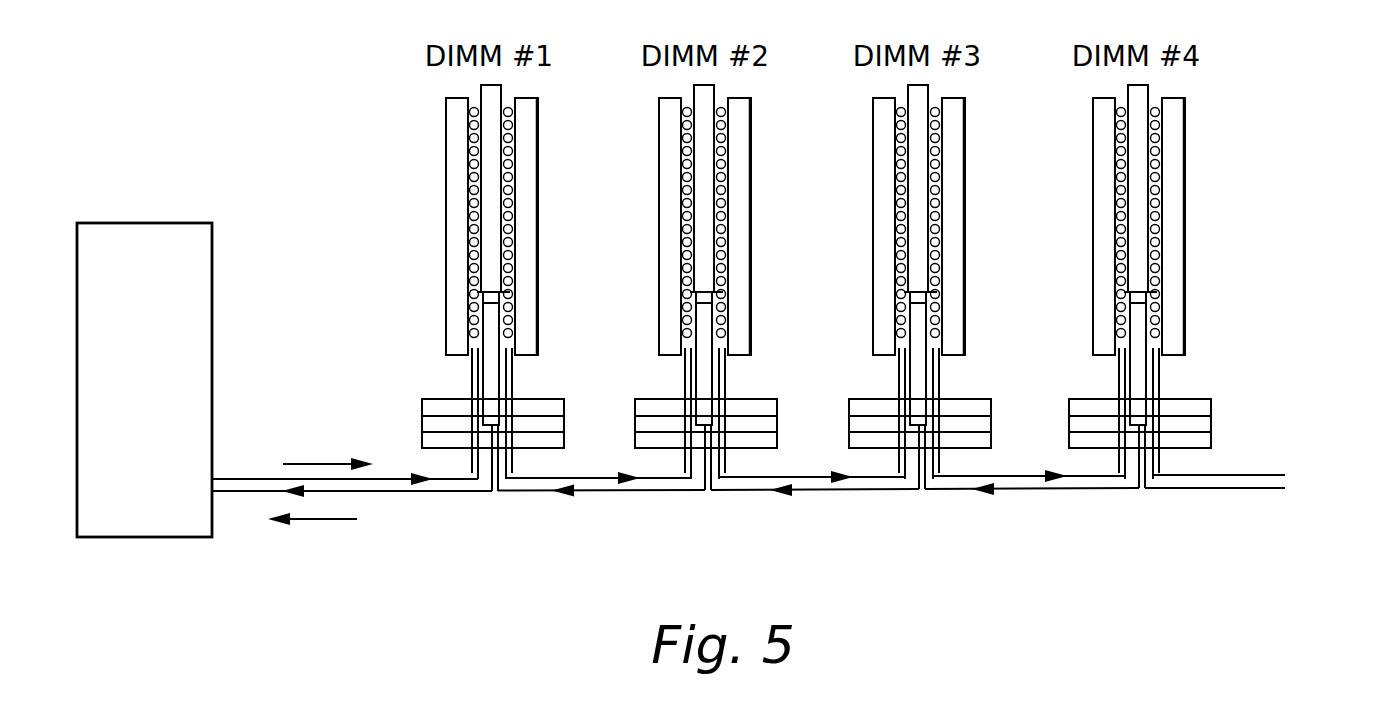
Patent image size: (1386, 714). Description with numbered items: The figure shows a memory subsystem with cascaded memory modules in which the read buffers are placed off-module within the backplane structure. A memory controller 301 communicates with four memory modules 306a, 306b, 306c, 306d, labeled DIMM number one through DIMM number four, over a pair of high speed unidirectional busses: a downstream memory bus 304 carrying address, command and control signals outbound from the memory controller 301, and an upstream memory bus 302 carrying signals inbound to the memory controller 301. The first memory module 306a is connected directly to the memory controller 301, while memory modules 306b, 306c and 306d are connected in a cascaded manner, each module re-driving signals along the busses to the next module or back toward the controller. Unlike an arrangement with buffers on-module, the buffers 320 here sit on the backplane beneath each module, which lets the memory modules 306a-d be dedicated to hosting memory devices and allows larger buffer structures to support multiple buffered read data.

The memory controller 301 is at (173, 223).
The upstream memory bus 302 is at (462, 492).
The downstream memory bus 304 is at (588, 473).
The memory module 306a is at (538, 185).
The memory module 306b is at (751, 185).
The memory module 306c is at (965, 185).
The memory module 306d is at (1185, 185).
The buffer 320 is at (548, 399).